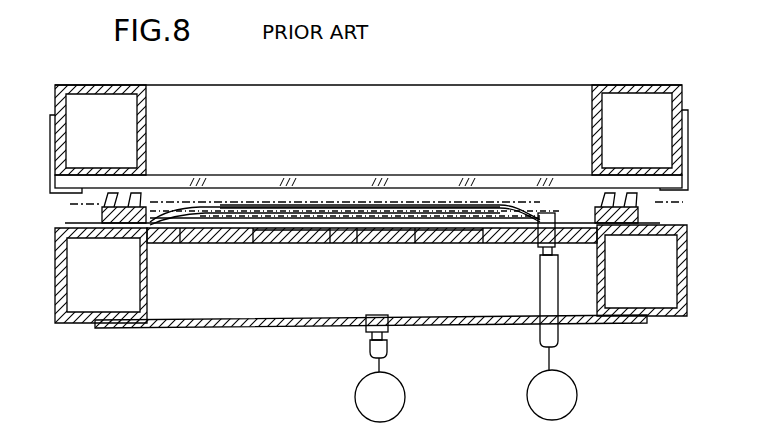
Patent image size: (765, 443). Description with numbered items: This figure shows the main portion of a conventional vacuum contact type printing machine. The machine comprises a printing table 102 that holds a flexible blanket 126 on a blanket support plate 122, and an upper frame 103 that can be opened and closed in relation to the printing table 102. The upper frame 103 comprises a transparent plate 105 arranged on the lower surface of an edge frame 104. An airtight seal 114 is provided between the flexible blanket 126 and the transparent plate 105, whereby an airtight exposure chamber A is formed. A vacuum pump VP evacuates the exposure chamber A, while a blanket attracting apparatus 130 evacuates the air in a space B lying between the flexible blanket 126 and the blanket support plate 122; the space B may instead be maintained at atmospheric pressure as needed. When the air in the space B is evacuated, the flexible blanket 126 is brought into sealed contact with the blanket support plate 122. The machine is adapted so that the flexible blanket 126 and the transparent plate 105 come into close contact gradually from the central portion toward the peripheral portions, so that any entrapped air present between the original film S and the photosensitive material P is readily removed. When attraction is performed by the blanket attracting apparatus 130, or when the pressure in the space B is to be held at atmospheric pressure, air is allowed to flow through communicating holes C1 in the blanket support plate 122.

The printing table 102 is at (117, 337).
The upper frame 103 is at (516, 81).
The edge frame 104 is at (146, 127).
The transparent plate 105 is at (450, 176).
The airtight seal 114 is at (100, 210).
The blanket support plate 122 is at (272, 245).
The flexible blanket 126 is at (460, 245).
The blanket attracting apparatus 130 is at (355, 399).
The original film S is at (313, 203).
The photosensitive material P is at (398, 203).
The exposure chamber A is at (522, 203).
The space B is at (364, 245).
The communicating holes C1 is at (322, 245).
The vacuum pump VP is at (552, 316).